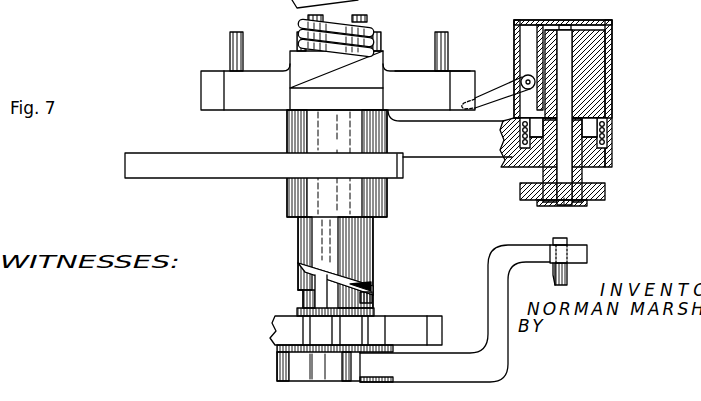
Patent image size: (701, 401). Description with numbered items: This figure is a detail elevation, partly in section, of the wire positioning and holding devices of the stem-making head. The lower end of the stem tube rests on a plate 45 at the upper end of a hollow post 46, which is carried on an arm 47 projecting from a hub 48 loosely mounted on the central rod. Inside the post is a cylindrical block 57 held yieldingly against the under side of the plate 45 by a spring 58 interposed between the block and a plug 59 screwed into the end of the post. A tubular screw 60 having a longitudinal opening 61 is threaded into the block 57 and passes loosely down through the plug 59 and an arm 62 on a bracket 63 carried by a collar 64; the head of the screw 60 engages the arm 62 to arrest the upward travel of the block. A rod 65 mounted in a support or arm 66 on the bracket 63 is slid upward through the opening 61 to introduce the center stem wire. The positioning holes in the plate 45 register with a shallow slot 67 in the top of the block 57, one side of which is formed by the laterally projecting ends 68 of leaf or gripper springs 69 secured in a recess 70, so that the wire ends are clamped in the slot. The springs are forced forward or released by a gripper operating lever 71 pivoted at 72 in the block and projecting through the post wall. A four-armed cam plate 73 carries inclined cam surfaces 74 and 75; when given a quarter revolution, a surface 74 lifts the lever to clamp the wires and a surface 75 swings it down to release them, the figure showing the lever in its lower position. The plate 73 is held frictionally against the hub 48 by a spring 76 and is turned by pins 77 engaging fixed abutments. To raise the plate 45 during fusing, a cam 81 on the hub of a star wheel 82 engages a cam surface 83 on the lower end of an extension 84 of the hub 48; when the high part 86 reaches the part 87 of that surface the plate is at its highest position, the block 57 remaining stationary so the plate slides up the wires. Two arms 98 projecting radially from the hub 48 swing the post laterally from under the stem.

The plate 45 is at (598, 20).
The post 46 is at (613, 49).
The arm 47 is at (450, 150).
The hub 48 is at (287, 134).
The cylindrical block 57 is at (593, 76).
The spring 58 is at (609, 136).
The plug 59 is at (598, 165).
The tubular screw 60 is at (545, 176).
The longitudinal opening 61 is at (560, 203).
The arm 62 is at (604, 189).
The bracket 63 is at (490, 277).
The collar 64 is at (278, 360).
The rod 65 is at (554, 276).
The support or arm 66 is at (582, 253).
The shallow slot 67 is at (567, 22).
The laterally projecting ends 68 is at (550, 22).
The leaf or gripper springs 69 is at (537, 50).
The recess 70 is at (537, 40).
The cam or gripper operating lever 71 is at (492, 83).
The pivot 72 is at (523, 77).
The cam plate 73 is at (407, 80).
The inclined cam surfaces 74 is at (204, 80).
The inclined cam surfaces 75 is at (358, 63).
The spring 76 is at (372, 31).
The pins 77 is at (233, 32).
The cam 81 is at (373, 298).
The star wheel 82 is at (439, 331).
The cam surface 83 is at (371, 286).
The extension 84 is at (298, 236).
The high part 86 is at (320, 277).
The part of the cam surface 87 is at (301, 296).
The arms 98 is at (178, 170).